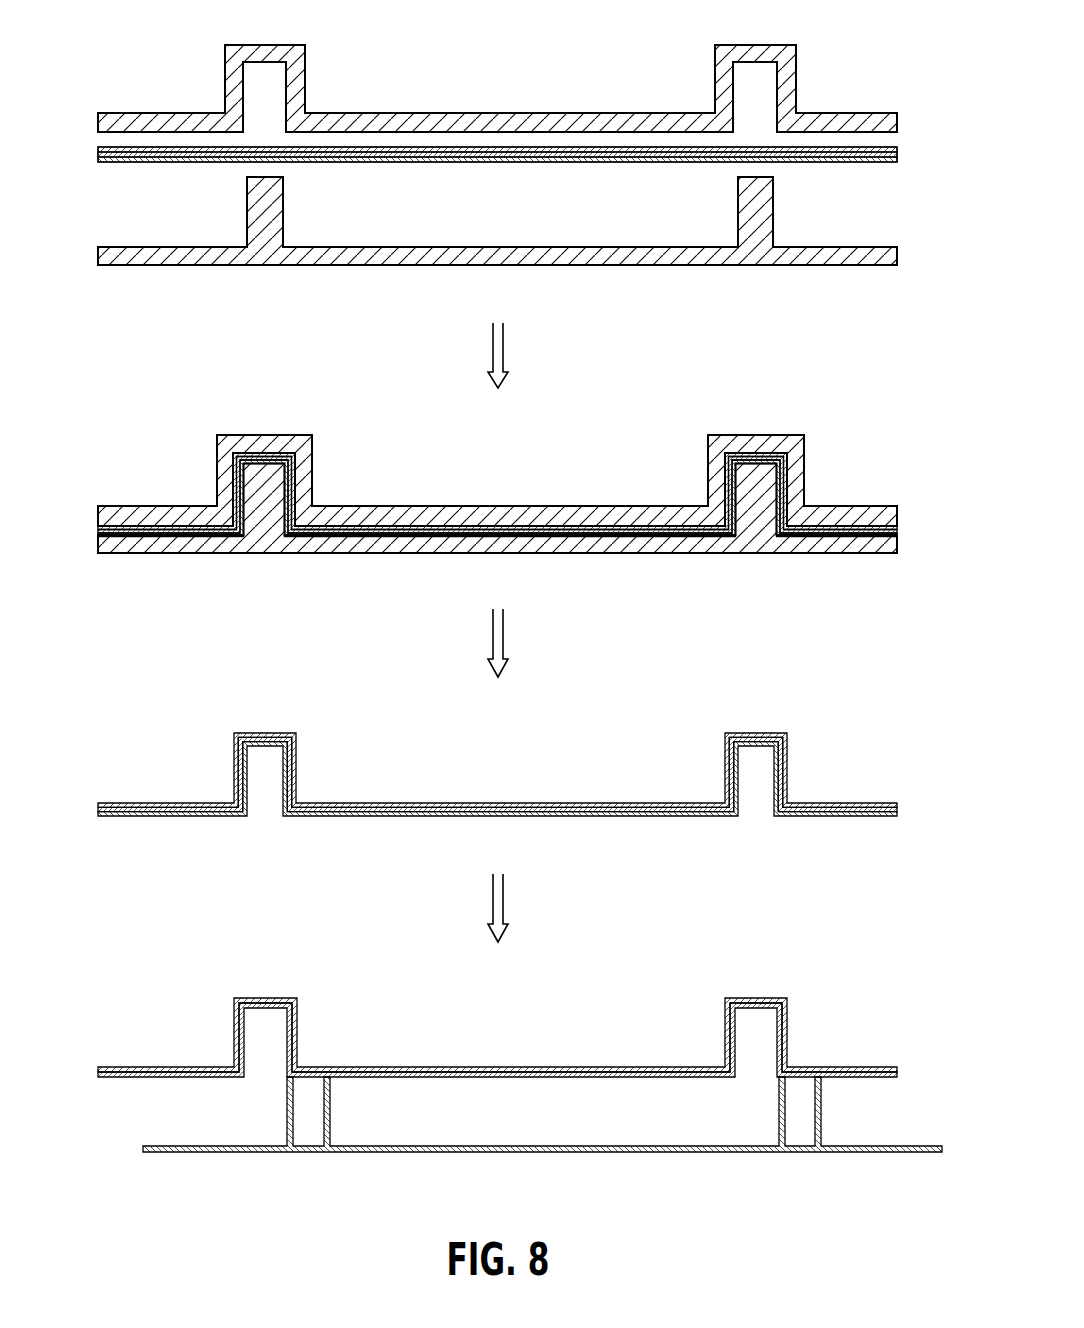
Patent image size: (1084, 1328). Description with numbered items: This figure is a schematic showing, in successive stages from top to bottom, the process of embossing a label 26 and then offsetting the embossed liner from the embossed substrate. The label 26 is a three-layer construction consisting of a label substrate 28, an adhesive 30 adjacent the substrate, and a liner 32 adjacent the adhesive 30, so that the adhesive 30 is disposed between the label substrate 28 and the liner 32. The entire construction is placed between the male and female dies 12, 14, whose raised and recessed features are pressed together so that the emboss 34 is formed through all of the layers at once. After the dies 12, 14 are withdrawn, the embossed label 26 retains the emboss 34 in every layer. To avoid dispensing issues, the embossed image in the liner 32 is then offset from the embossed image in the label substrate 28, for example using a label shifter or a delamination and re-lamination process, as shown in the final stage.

The male die 12 is at (150, 267).
The female die 14 is at (152, 111).
The label 26 is at (903, 155).
The label substrate 28 is at (98, 148).
The adhesive 30 is at (98, 155).
The liner 32 is at (98, 162).
The emboss 34 is at (295, 724).